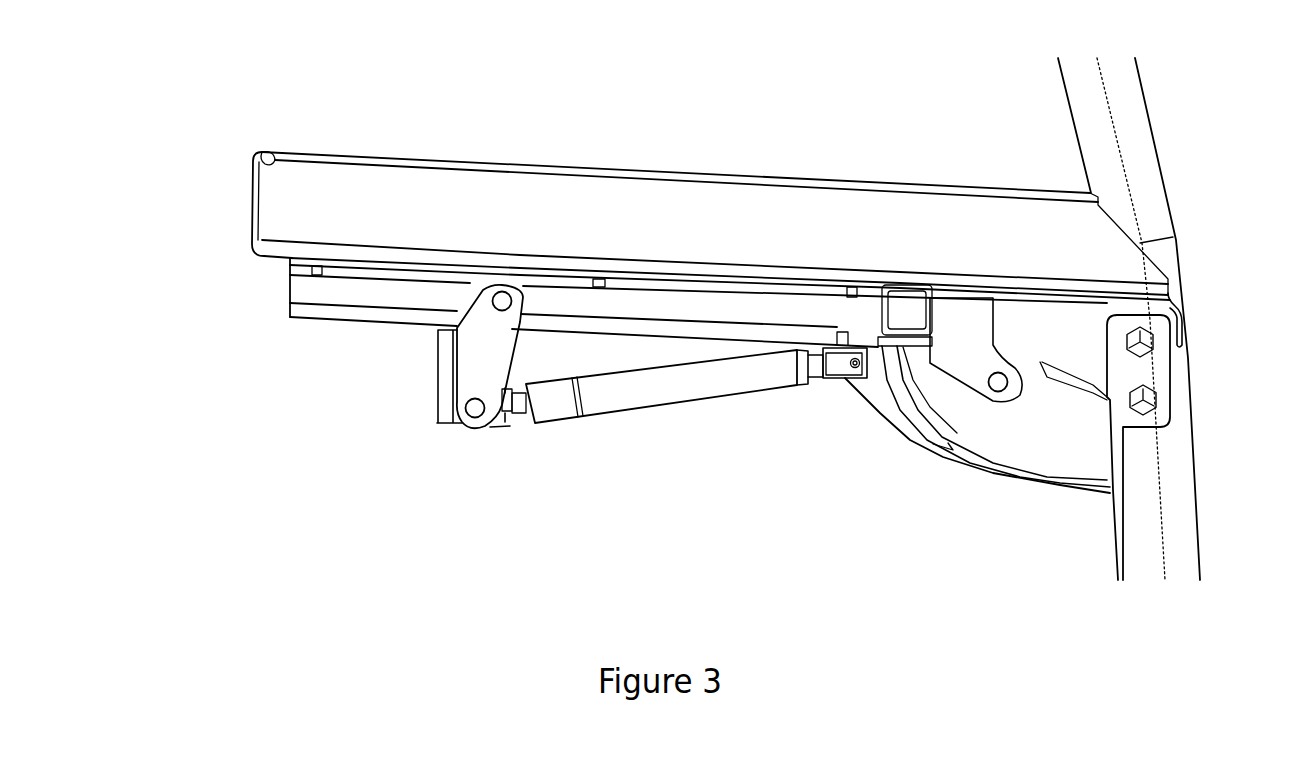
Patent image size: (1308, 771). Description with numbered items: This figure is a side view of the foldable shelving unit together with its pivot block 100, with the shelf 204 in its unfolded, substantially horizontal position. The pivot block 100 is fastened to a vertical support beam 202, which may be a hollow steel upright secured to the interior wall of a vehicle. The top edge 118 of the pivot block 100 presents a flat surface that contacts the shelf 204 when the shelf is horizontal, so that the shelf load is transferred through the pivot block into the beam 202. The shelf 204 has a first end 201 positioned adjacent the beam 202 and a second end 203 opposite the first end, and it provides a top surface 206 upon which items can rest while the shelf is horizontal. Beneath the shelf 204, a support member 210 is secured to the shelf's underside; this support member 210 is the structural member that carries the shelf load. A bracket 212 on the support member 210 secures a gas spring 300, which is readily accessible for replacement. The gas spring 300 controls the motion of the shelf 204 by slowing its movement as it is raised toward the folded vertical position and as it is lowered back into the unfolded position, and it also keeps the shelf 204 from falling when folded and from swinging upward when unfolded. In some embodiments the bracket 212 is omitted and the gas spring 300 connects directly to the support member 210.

The pivot block 100 is at (1007, 455).
The top edge 118 is at (833, 399).
The first end 201 is at (1230, 285).
The support beam 202 is at (1048, 319).
The second end 203 is at (182, 190).
The shelf 204 is at (715, 193).
The top surface 206 is at (676, 136).
The support member 210 is at (665, 302).
The bracket 212 is at (402, 356).
The gas spring 300 is at (662, 443).